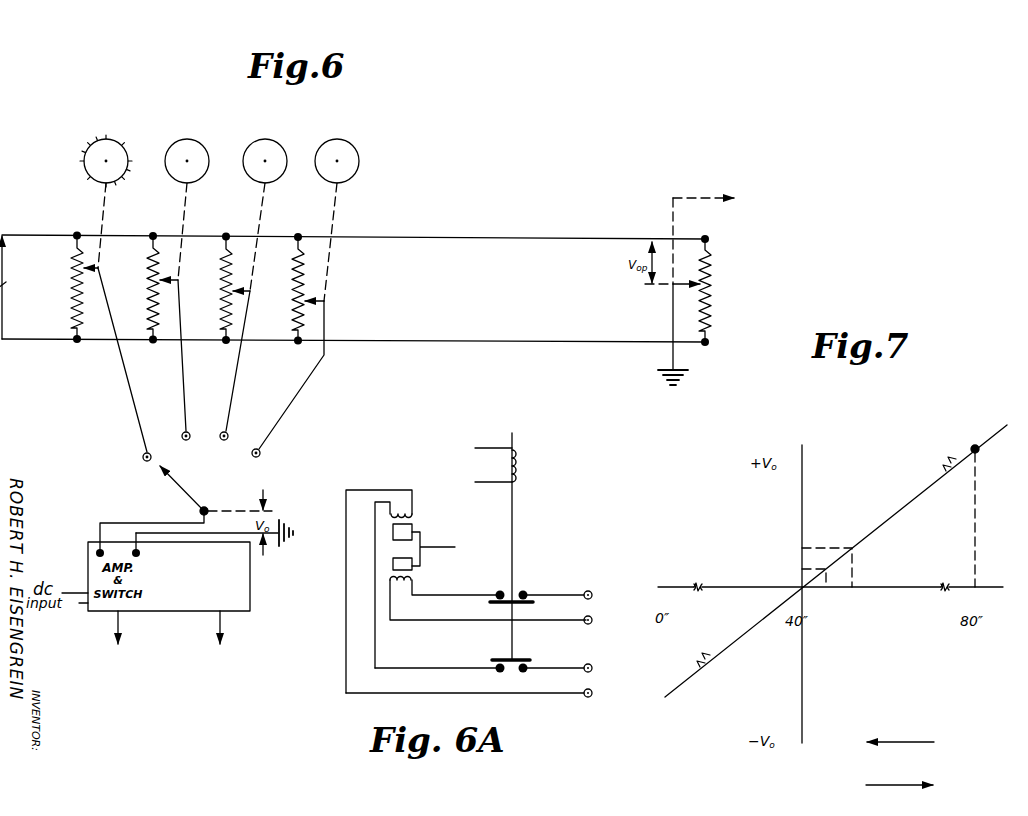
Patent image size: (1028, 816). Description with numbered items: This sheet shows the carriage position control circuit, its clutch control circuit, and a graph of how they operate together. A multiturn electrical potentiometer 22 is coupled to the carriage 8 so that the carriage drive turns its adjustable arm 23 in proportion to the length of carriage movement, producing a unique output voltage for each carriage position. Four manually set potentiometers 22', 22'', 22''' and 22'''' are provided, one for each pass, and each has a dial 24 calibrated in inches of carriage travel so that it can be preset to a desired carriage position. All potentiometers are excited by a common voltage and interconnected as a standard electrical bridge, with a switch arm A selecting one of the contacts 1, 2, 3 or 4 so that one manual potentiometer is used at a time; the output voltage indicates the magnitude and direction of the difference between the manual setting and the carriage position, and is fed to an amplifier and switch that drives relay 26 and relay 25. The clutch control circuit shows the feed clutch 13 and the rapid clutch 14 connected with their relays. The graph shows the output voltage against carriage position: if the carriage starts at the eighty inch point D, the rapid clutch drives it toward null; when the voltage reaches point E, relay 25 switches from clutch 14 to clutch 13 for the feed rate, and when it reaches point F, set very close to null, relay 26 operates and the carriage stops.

In FIG. 6, the multiturn electrical potentiometer 22 is at (729, 290).
In FIG. 6, the manually set potentiometer 22' is at (57, 288).
In FIG. 6, the manually set potentiometer 22'' is at (145, 288).
In FIG. 6, the manually set potentiometer 22''' is at (217, 289).
In FIG. 6, the manually set potentiometer 22'''' is at (289, 289).
In FIG. 6, the adjustable arm 23 is at (681, 288).
In FIG. 6, the dial 24 is at (179, 141).
In FIG. 6, the relay 25 is at (220, 659).
In FIG. 6A, the relay 25 is at (515, 466).
In FIG. 6, the relay 26 is at (118, 659).
In FIG. 6A, the feed clutch 13 is at (413, 525).
In FIG. 6A, the rapid clutch 14 is at (415, 575).
In FIG. 6, the carriage 8 is at (840, 198).
In FIG. 6, the switch contact 1 is at (152, 449).
In FIG. 6, the switch contact 2 is at (193, 430).
In FIG. 6, the switch contact 3 is at (231, 435).
In FIG. 6, the switch contact 4 is at (262, 457).
In FIG. 6, the switch arm A is at (184, 490).
In FIG. 7, the initial carriage position point D is at (977, 441).
In FIG. 7, the rapid-to-feed switching point E is at (852, 542).
In FIG. 7, the stop point F is at (826, 563).